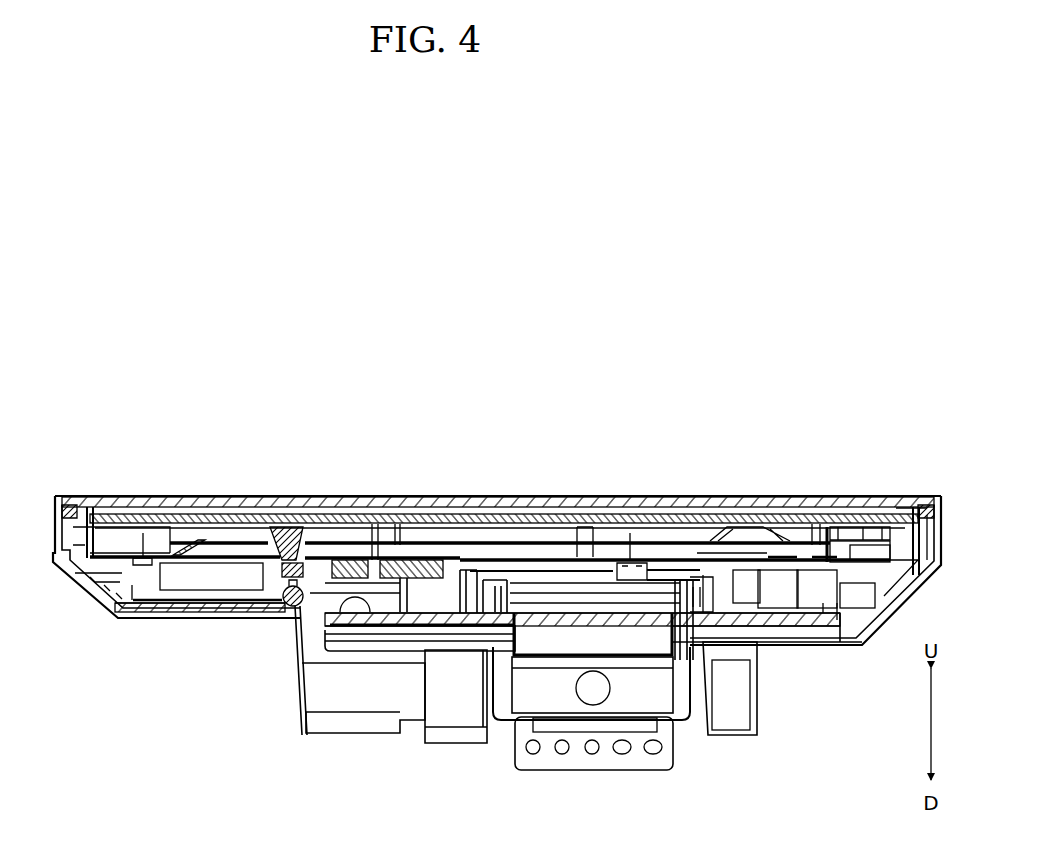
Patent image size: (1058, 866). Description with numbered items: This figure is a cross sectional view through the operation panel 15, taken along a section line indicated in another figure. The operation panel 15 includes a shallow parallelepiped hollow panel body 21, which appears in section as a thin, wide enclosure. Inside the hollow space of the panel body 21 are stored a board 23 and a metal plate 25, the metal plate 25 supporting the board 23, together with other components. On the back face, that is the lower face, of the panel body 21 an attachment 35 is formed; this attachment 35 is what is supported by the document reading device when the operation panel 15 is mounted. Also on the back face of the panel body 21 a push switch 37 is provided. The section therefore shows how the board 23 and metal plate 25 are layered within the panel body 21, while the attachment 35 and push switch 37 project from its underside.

The operation panel 15 is at (438, 390).
The panel body 21 is at (243, 498).
The board 23 is at (293, 498).
The metal plate 25 is at (361, 498).
The attachment 35 is at (573, 752).
The push switch 37 is at (290, 614).